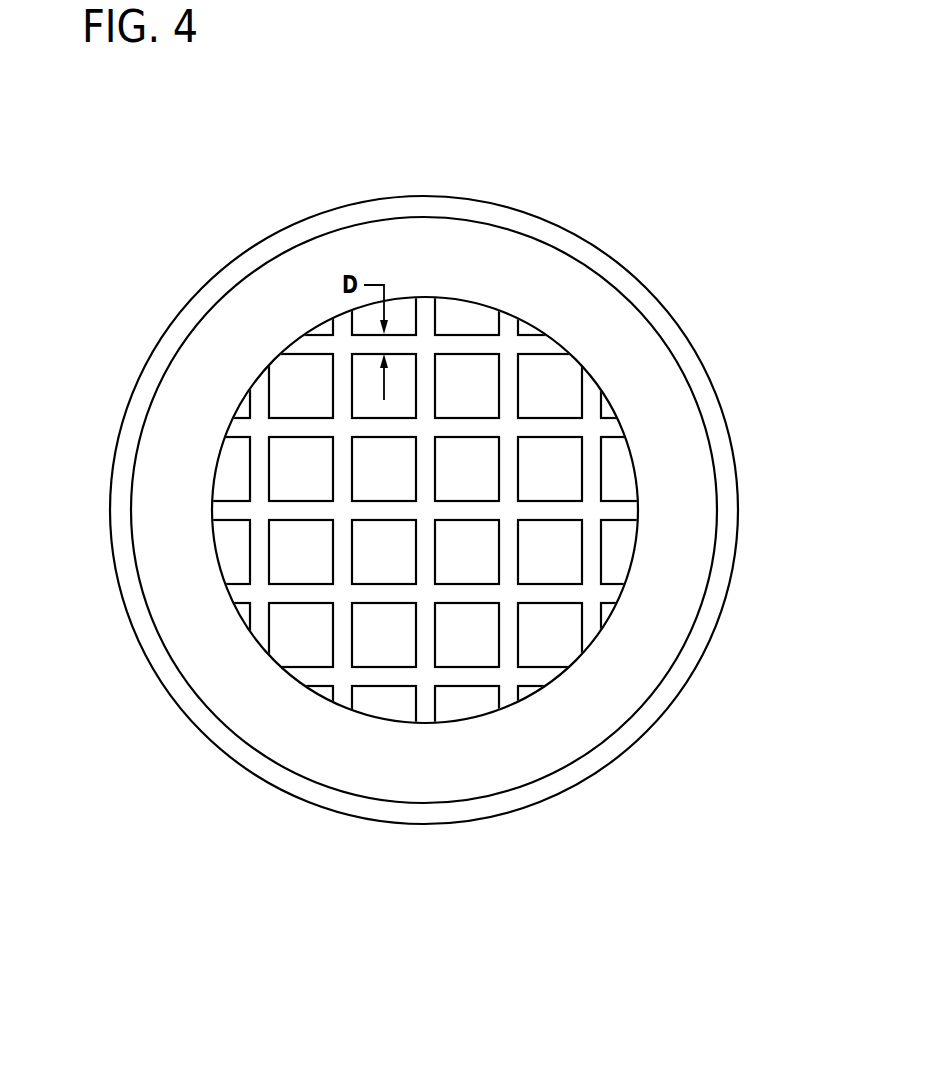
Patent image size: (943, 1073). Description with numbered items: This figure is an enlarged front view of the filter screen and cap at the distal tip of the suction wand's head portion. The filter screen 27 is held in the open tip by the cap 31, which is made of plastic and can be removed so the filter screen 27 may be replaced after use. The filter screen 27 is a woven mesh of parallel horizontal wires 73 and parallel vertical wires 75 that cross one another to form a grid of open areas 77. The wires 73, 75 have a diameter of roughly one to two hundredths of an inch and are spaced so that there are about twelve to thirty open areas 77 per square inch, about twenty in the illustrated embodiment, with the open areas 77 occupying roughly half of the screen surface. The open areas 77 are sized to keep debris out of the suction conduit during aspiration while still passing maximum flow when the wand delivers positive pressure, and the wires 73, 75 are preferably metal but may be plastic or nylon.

The filter screen 27 is at (238, 472).
The cap 31 is at (573, 275).
The parallel horizontal wires 73 is at (472, 342).
The parallel vertical wires 75 is at (343, 387).
The open areas 77 is at (315, 555).